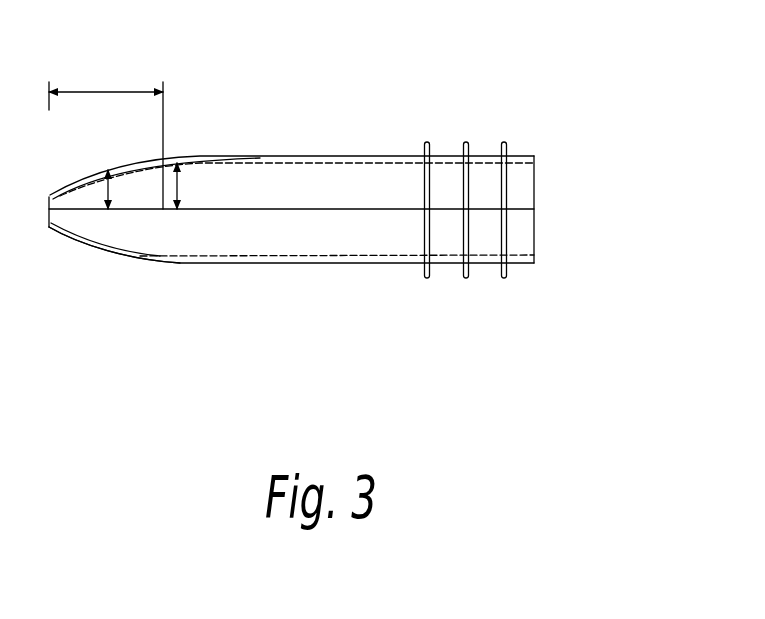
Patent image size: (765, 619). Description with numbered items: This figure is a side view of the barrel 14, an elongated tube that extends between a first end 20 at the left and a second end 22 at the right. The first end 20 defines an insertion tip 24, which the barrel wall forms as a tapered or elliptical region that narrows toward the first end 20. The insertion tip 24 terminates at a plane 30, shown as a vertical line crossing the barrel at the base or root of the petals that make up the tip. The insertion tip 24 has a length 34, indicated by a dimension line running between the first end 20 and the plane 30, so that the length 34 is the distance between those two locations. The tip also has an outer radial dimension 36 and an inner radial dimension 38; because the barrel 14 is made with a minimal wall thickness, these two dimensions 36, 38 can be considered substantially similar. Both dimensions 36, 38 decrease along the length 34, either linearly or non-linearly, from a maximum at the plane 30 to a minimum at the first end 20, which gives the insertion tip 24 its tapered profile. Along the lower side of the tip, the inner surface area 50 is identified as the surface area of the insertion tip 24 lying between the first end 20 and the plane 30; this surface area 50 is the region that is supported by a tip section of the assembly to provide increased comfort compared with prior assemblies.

The barrel 14 is at (212, 263).
The first end 20 is at (49, 200).
The second end 22 is at (536, 156).
The insertion tip 24 is at (95, 284).
The plane 30 is at (164, 127).
The length 34 is at (96, 92).
The outer radial dimension 36 is at (180, 182).
The inner radial dimension 38 is at (108, 180).
The inner surface area 50 is at (102, 250).